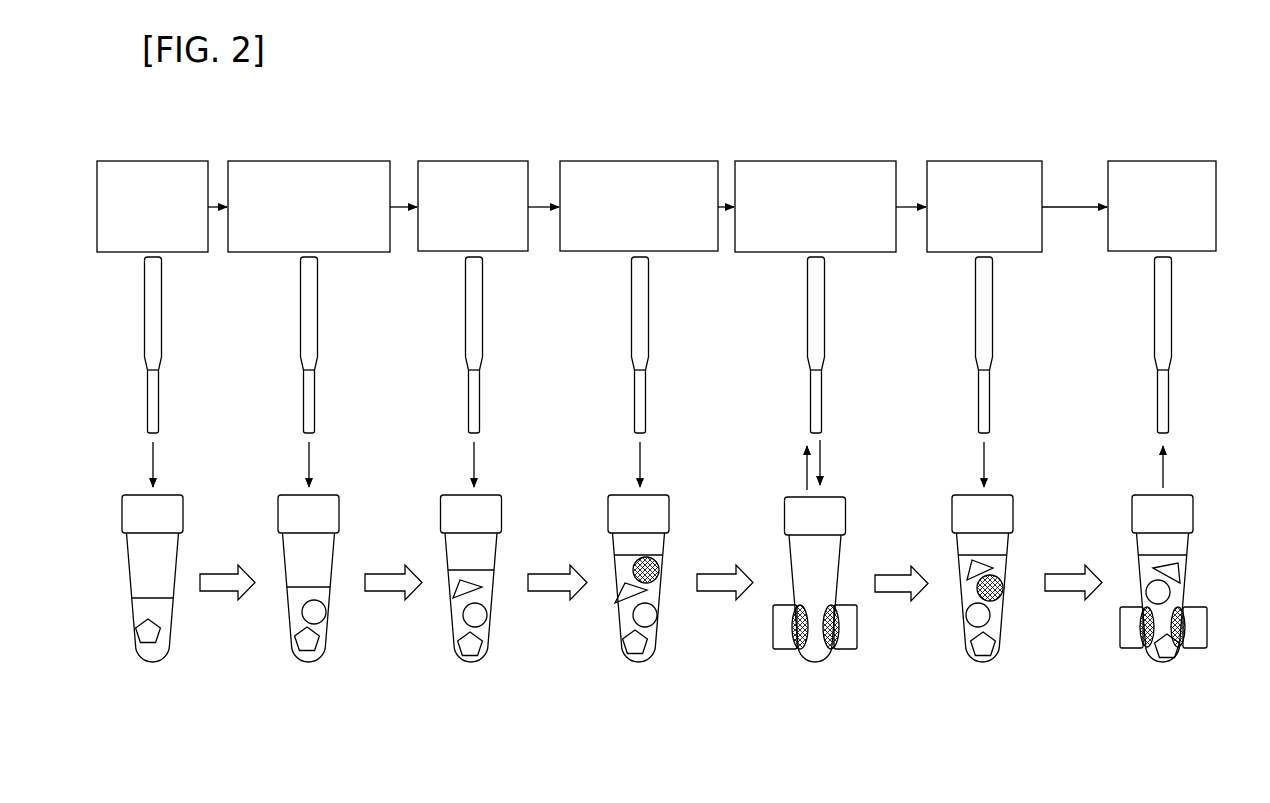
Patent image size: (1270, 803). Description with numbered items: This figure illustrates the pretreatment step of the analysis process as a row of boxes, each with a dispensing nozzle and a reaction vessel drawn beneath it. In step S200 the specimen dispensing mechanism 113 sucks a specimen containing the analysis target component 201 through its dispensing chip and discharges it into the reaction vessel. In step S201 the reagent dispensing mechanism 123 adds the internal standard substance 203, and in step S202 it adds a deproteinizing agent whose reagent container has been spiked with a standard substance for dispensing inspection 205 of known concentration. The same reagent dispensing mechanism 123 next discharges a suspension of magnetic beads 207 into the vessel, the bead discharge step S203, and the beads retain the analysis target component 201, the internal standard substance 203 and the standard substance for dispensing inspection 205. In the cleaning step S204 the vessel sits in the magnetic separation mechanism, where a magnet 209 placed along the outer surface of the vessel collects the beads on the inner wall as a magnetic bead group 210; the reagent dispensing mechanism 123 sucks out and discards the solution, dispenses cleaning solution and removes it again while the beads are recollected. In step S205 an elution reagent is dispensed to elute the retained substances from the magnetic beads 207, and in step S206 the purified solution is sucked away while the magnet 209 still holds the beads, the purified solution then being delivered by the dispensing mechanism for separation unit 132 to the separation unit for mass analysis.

The specimen discharge step S200 is at (152, 200).
The internal standard substance discharge step S201 is at (309, 200).
The reagent discharge step S202 is at (473, 200).
The magnetic beads discharge step S203 is at (639, 200).
The magnetic beads cleaning step S204 is at (815, 200).
The eluate discharge step S205 is at (984, 200).
The purified solution suction step S206 is at (1162, 200).
The specimen dispensing mechanism 113 is at (159, 390).
The reagent dispensing mechanism 123 is at (315, 390).
The dispensing mechanism for separation unit 132 is at (1169, 390).
The analysis target component 201 is at (137, 644).
The internal standard substance 203 is at (321, 618).
The standard substance for dispensing inspection 205 is at (451, 604).
The magnetic beads 207 is at (655, 584).
The magnet 209 is at (836, 650).
The magnetic bead group 210 is at (800, 650).